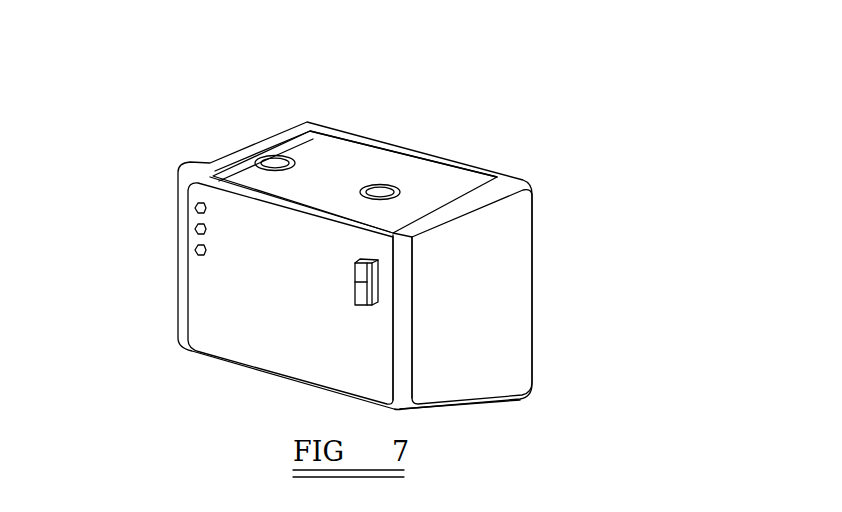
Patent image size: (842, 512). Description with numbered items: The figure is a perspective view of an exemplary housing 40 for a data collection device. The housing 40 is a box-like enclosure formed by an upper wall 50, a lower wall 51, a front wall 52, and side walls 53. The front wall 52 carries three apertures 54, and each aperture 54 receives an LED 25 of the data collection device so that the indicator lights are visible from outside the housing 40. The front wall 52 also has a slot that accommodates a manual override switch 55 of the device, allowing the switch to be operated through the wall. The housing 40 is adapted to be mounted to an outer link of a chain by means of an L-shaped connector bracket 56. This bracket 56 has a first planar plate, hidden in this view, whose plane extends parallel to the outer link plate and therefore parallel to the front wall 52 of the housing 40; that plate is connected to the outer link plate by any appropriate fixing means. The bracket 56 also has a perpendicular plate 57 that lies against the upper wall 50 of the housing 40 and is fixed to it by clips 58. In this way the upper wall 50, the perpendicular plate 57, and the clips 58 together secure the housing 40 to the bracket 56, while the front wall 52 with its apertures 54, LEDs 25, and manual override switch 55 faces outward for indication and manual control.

The housing 40 is at (130, 269).
The upper wall 50 is at (523, 180).
The lower wall 51 is at (437, 407).
The front wall 52 is at (284, 340).
The side walls 53 is at (532, 333).
The apertures 54 is at (195, 208).
The LED 25 is at (195, 250).
The manual override switch 55 is at (379, 292).
The L-shaped connector bracket 56 is at (337, 128).
The perpendicular plate 57 is at (373, 150).
The clips 58 is at (258, 158).